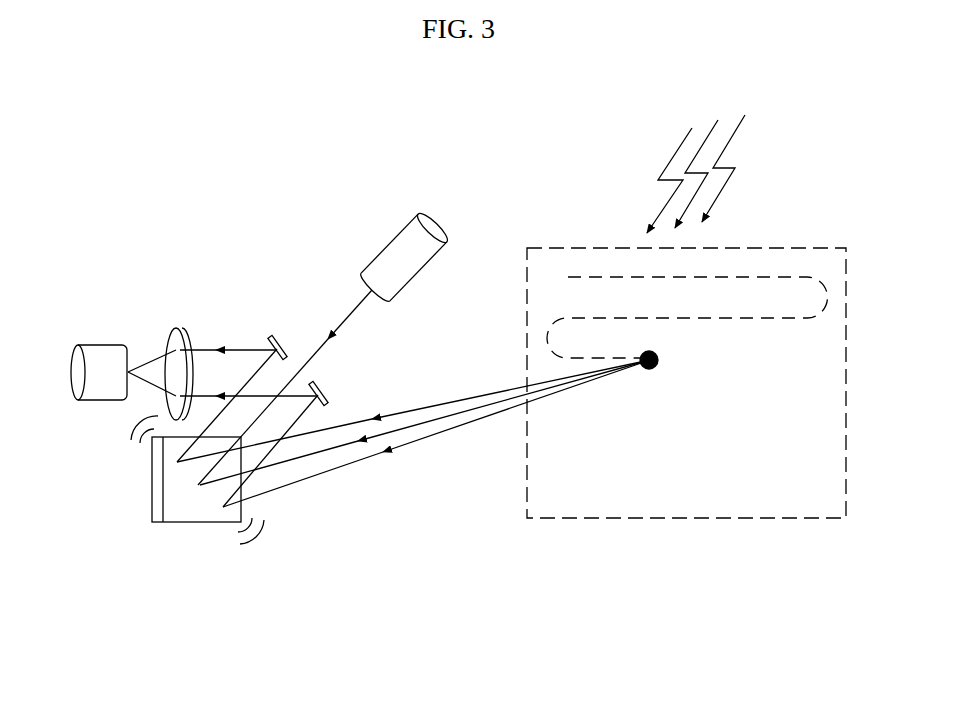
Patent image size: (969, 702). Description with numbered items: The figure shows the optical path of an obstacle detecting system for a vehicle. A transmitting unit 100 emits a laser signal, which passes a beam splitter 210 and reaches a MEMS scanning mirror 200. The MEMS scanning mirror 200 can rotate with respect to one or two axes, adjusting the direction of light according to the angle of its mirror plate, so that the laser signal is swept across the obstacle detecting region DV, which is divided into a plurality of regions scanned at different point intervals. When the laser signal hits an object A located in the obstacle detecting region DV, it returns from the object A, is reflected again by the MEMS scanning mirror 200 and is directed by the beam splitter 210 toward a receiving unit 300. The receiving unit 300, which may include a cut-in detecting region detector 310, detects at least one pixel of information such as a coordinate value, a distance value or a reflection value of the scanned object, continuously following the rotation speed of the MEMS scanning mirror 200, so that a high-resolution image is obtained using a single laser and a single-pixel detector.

The transmitting unit 100 is at (377, 244).
The MEMS scanning mirror 200 is at (195, 523).
The beam splitter 210 is at (274, 332).
The receiving unit 300 is at (100, 402).
The cut-in detecting region detector 310 is at (177, 322).
The obstacle detecting region DV is at (818, 256).
The object A is at (649, 374).